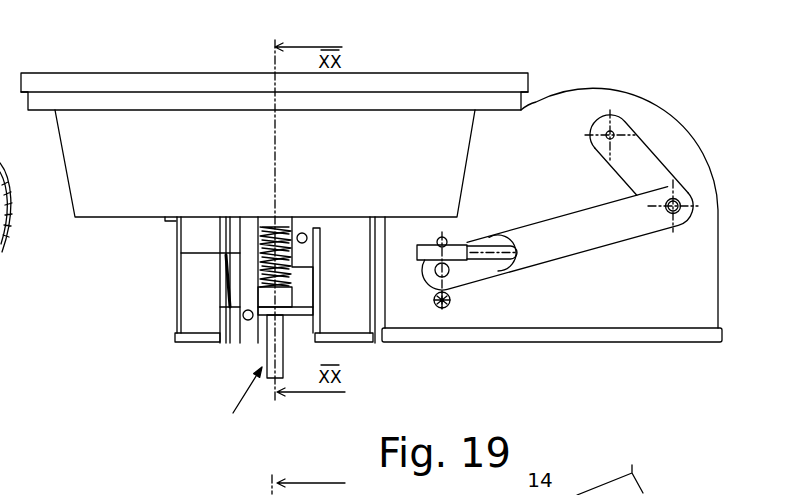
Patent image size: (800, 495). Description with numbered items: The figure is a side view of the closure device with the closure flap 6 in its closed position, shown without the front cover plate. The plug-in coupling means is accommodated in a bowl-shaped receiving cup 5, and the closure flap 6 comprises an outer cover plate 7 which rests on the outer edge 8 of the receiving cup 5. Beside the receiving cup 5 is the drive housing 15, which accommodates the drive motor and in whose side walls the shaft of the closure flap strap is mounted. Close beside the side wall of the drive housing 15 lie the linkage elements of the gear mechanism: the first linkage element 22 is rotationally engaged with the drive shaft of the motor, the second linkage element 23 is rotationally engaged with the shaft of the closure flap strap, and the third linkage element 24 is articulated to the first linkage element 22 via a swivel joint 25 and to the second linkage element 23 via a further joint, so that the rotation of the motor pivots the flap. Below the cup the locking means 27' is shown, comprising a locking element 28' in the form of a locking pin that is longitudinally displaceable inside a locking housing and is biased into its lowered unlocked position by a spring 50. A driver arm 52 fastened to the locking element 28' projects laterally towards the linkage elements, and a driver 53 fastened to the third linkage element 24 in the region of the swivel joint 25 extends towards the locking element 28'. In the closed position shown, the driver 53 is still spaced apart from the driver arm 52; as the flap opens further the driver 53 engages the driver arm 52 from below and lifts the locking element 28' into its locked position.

The receiving cup 5 is at (100, 160).
The closure flap 6 is at (274, 68).
The outer cover plate 7 is at (428, 85).
The outer edge 8 is at (47, 100).
The drive housing 15 is at (676, 135).
The first linkage element 22 is at (474, 272).
The second linkage element 23 is at (643, 167).
The third linkage element 24 is at (607, 228).
The swivel joint 25 is at (510, 245).
The locking means 27' is at (239, 406).
The locking element 28' is at (231, 353).
The spring 50 is at (258, 255).
The driver arm 52 is at (307, 310).
The driver 53 is at (458, 252).